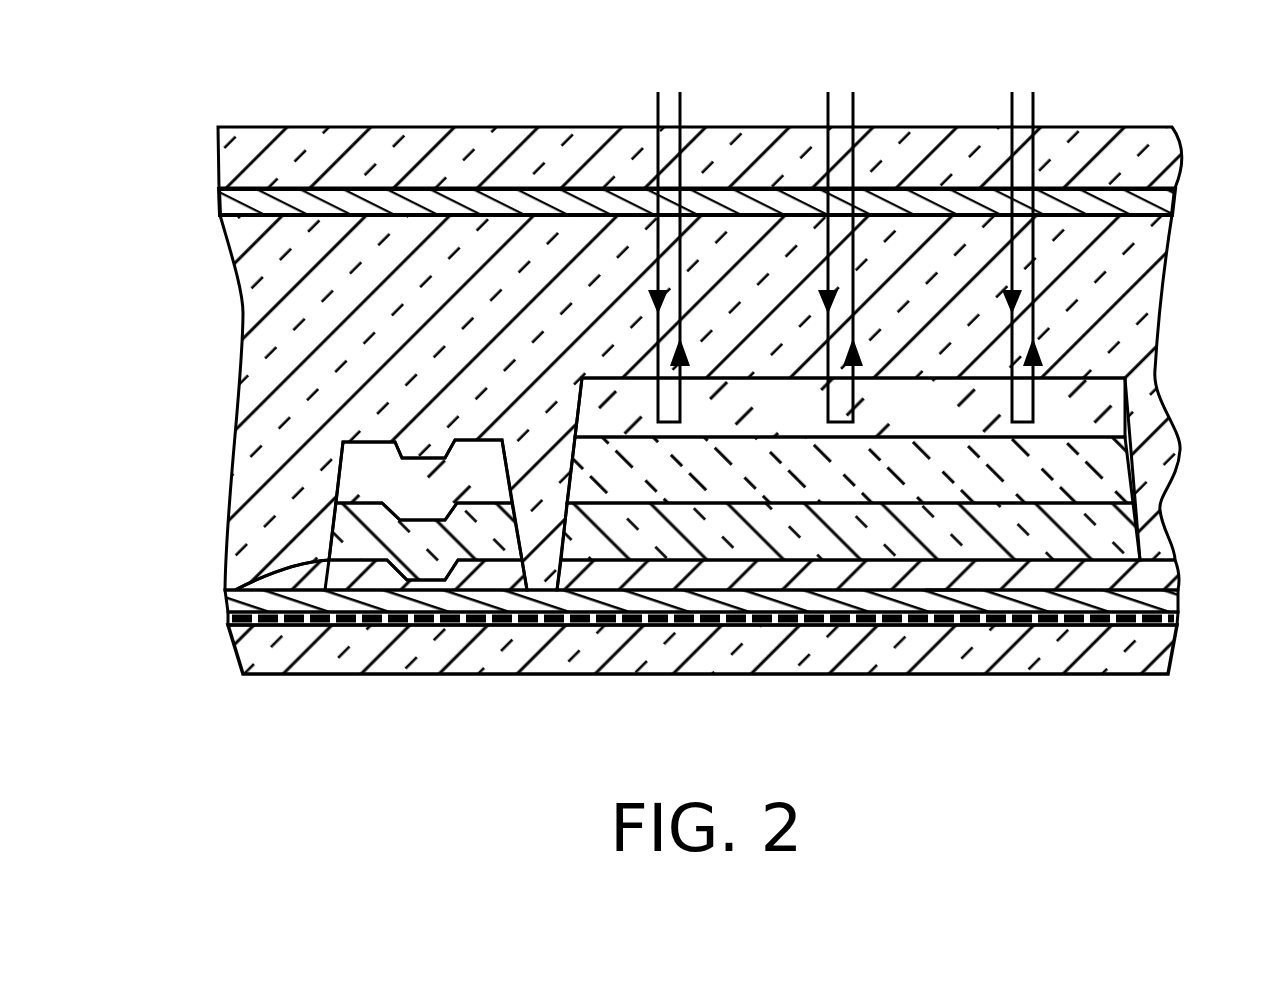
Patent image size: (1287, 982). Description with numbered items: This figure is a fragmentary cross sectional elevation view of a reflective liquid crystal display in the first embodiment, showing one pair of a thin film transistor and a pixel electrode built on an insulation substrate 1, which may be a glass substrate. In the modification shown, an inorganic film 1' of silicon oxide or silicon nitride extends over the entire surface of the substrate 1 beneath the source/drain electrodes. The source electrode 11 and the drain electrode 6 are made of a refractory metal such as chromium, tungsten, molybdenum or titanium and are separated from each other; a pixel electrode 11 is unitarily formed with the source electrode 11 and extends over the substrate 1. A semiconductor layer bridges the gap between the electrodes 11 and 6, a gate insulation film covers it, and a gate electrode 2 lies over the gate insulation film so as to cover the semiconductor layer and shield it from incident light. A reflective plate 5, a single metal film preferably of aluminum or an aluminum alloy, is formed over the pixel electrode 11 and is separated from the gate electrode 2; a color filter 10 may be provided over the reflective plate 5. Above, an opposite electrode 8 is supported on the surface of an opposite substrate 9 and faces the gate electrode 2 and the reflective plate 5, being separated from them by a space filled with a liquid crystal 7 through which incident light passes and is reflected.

The insulation substrate 1 is at (702, 684).
The inorganic film 1' is at (746, 662).
The gate electrode 2 is at (343, 445).
The reflective plate 5 is at (1127, 466).
The drain electrode 6 is at (232, 610).
The liquid crystal 7 is at (1148, 312).
The opposite electrode 8 is at (1175, 189).
The opposite substrate 9 is at (1130, 136).
The color filter 10 is at (1120, 417).
The source electrode and pixel electrode 11 is at (945, 597).